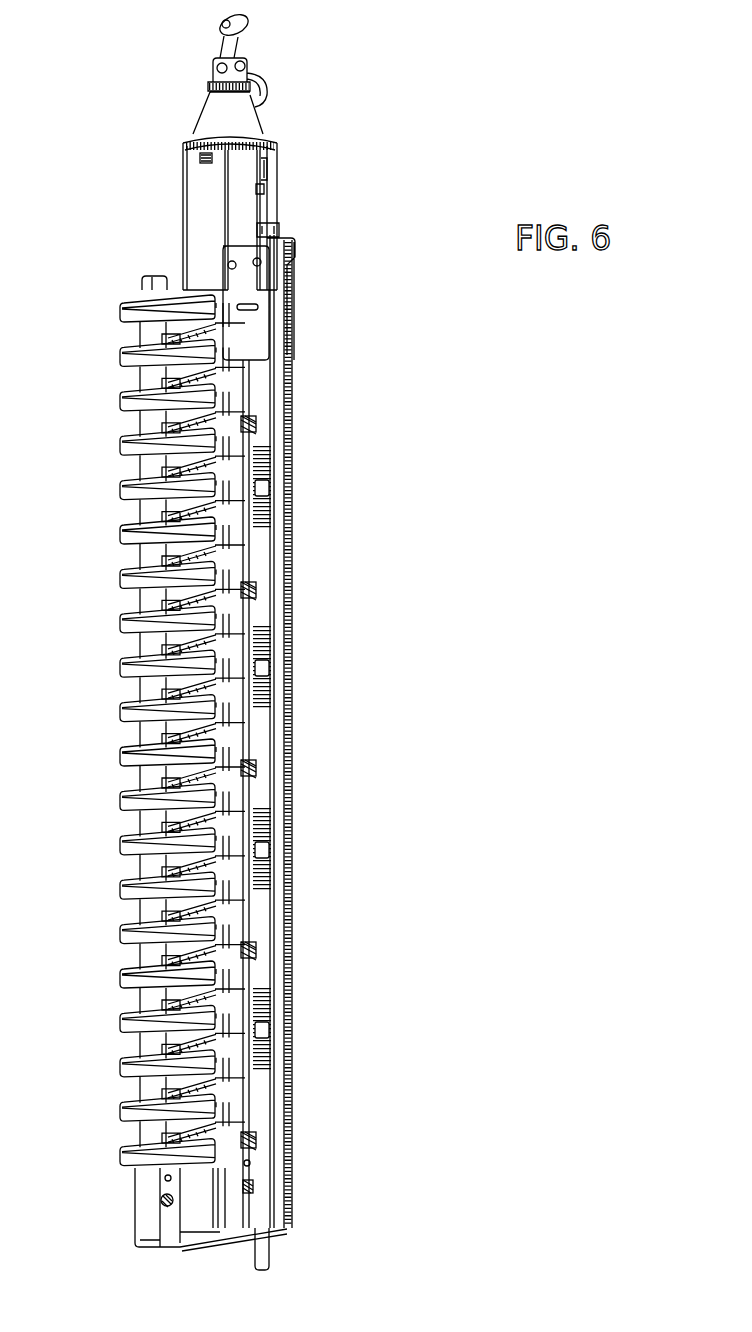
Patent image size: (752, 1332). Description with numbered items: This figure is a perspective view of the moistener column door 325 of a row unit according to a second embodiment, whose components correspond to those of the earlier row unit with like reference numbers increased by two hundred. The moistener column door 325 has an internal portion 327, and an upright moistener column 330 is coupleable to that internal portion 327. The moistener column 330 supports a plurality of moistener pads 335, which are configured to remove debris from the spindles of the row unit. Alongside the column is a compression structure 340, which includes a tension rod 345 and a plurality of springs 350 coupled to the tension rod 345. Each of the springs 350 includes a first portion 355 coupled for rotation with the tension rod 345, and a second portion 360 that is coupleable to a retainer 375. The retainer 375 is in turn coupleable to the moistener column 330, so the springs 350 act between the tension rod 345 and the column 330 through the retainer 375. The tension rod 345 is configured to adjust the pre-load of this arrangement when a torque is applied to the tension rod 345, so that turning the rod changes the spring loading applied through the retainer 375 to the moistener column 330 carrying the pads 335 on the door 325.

The moistener column door 325 is at (277, 1190).
The internal portion 327 is at (145, 1222).
The moistener column 330 is at (237, 123).
The moistener pads 335 is at (125, 303).
The compression structure 340 is at (375, 181).
The tension rod 345 is at (263, 407).
The springs 350 is at (256, 467).
The first portion 355 is at (260, 515).
The second portion 360 is at (256, 430).
The retainer 375 is at (258, 438).